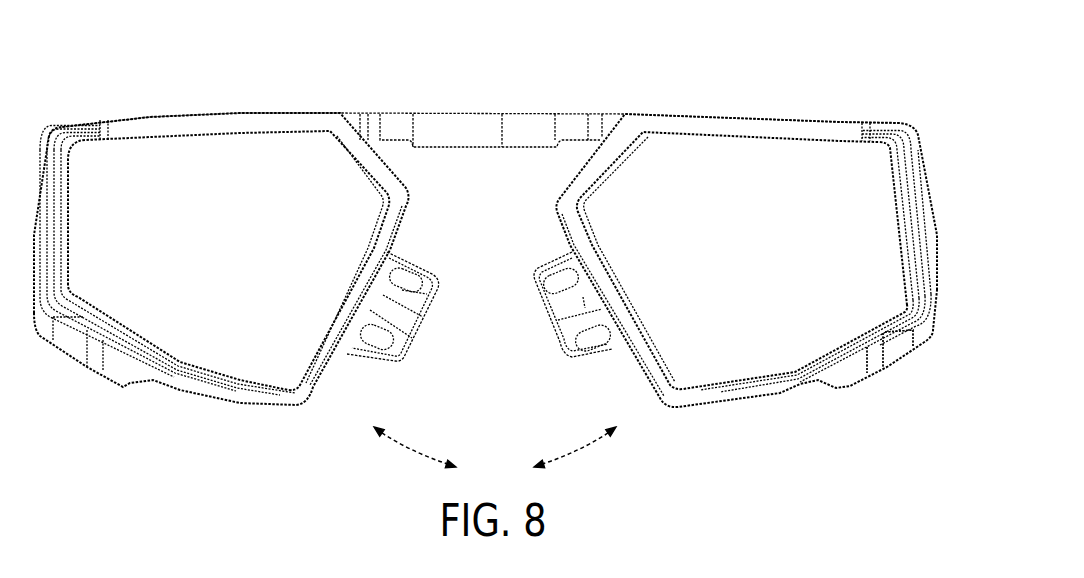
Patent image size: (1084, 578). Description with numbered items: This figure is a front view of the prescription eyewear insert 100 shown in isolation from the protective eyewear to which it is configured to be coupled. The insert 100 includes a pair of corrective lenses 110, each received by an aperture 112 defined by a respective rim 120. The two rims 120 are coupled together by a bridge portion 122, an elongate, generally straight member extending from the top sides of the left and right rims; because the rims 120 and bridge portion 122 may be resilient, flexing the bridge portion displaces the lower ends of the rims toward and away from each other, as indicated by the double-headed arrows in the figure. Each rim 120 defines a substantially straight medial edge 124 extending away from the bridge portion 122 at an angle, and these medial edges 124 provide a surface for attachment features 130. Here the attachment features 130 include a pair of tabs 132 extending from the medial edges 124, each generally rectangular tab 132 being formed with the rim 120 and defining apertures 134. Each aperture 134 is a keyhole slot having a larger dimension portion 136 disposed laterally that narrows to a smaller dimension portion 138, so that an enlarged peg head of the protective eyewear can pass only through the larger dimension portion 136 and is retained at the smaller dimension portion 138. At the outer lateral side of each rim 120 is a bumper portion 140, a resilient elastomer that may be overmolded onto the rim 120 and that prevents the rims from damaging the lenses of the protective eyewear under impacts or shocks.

The prescription eyewear insert 100 is at (657, 54).
The corrective lenses 110 is at (147, 234).
The aperture 112 is at (673, 133).
The rim 120 is at (727, 118).
The bridge portion 122 is at (440, 120).
The medial edge 124 is at (317, 357).
The attachment features 130 is at (535, 243).
The tabs 132 is at (557, 310).
The apertures 134 is at (413, 278).
The larger dimension portion 136 is at (403, 257).
The smaller dimension portion 138 is at (420, 294).
The bumper portion 140 is at (897, 337).